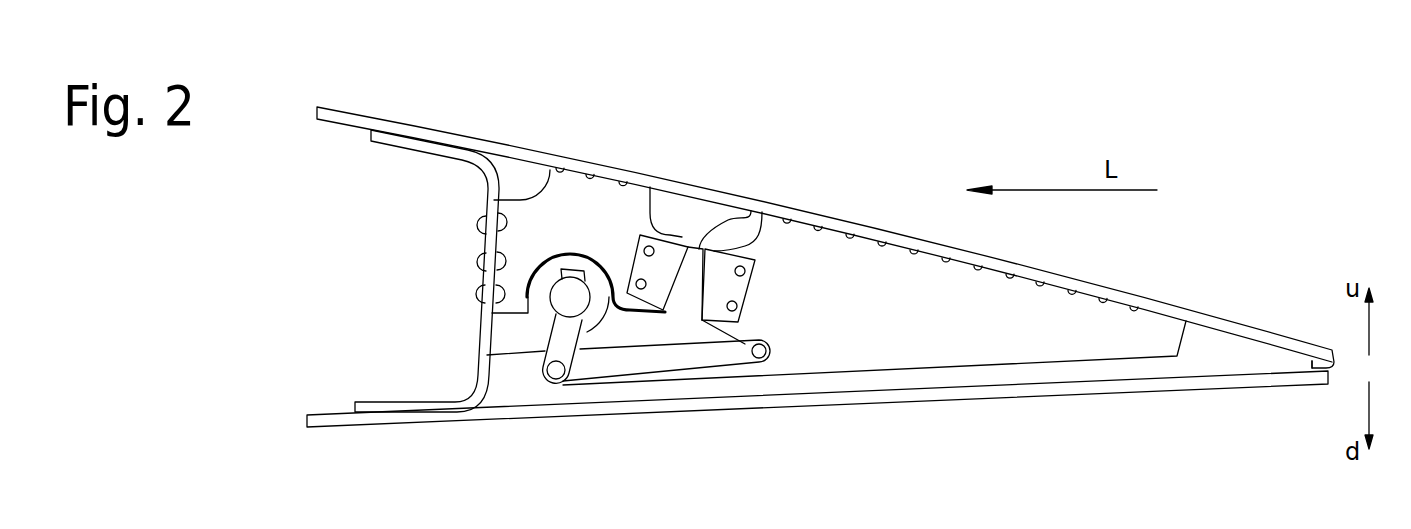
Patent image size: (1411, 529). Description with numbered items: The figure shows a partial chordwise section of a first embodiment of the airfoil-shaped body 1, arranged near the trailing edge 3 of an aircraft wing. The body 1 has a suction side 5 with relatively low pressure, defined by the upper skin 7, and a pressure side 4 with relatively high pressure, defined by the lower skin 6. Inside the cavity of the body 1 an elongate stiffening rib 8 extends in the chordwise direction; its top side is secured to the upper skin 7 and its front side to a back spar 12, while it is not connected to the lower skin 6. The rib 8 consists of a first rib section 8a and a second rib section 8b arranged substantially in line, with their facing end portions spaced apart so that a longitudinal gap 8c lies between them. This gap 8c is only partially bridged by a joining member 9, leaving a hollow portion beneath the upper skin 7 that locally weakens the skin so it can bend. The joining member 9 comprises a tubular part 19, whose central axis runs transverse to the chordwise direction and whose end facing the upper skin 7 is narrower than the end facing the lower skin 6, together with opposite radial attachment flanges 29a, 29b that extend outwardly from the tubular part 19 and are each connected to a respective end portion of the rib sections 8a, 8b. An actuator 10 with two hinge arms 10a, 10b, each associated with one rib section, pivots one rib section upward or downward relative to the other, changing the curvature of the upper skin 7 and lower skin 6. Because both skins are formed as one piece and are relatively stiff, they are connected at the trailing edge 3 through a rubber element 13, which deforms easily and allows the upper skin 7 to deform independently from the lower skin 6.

The airfoil-shaped body 1 is at (413, 312).
The trailing edge 3 is at (1402, 374).
The pressure side 4 is at (910, 462).
The suction side 5 is at (926, 182).
The lower skin 6 is at (1062, 397).
The upper skin 7 is at (1148, 298).
The elongate stiffening rib 8 is at (985, 313).
The first rib section 8a is at (612, 197).
The second rib section 8b is at (800, 247).
The longitudinal gap 8c is at (695, 220).
The joining member 9 is at (680, 294).
The actuator 10 is at (565, 372).
The hinge arm 10a is at (713, 355).
The hinge arm 10b is at (565, 333).
The back spar 12 is at (483, 357).
The rubber element 13 is at (1333, 368).
The tubular part 19 is at (752, 210).
The radial attachment flange 29a is at (653, 268).
The radial attachment flange 29b is at (733, 286).